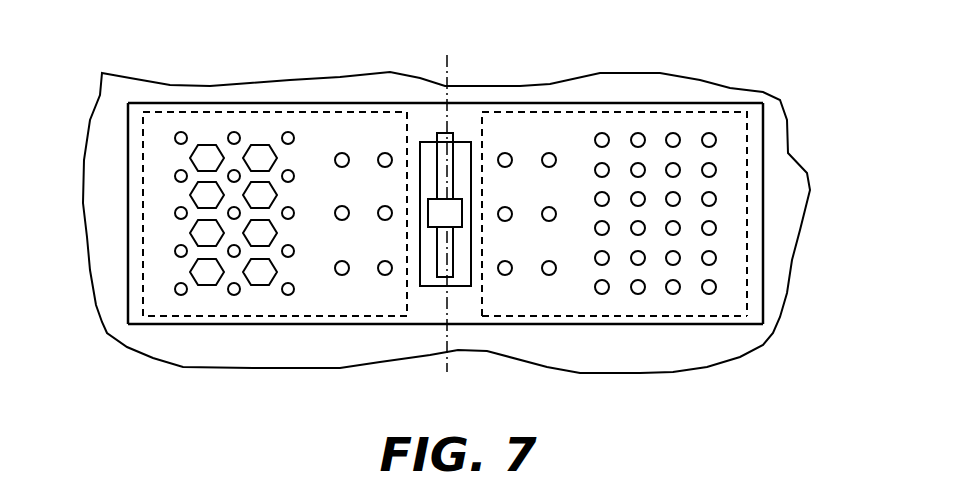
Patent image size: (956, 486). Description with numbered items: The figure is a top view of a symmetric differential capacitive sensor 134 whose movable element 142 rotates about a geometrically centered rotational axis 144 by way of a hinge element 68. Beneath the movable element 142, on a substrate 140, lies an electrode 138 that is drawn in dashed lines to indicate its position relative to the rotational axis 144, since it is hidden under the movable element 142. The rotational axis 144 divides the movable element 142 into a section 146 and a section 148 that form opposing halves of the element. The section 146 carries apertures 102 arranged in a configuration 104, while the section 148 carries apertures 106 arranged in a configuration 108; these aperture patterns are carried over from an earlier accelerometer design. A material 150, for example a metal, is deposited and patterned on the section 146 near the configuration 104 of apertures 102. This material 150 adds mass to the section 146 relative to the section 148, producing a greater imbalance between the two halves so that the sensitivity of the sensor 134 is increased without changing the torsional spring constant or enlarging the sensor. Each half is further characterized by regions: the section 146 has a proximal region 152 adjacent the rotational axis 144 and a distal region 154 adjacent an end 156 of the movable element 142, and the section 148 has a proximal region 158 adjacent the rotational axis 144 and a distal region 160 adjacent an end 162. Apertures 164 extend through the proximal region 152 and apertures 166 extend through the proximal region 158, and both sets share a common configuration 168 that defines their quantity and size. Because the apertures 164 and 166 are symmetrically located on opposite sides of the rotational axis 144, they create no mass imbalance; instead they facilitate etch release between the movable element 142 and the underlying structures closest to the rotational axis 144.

The hinge element 68 is at (459, 205).
The apertures 102 is at (178, 212).
The configuration 104 is at (160, 291).
The apertures 106 is at (716, 137).
The configuration 108 is at (729, 286).
The symmetric differential capacitive sensor 134 is at (662, 423).
The electrode 138 is at (607, 316).
The substrate 140 is at (110, 136).
The movable element 142 is at (170, 107).
The rotational axis 144 is at (447, 78).
The section 146 is at (334, 107).
The section 148 is at (567, 105).
The material 150 is at (212, 273).
The proximal region 152 is at (376, 105).
The distal region 154 is at (238, 105).
The end 156 is at (127, 263).
The proximal region 158 is at (512, 105).
The distal region 160 is at (692, 106).
The end 162 is at (763, 240).
The apertures 164 is at (338, 213).
The apertures 166 is at (555, 214).
The common configuration 168 is at (366, 280).